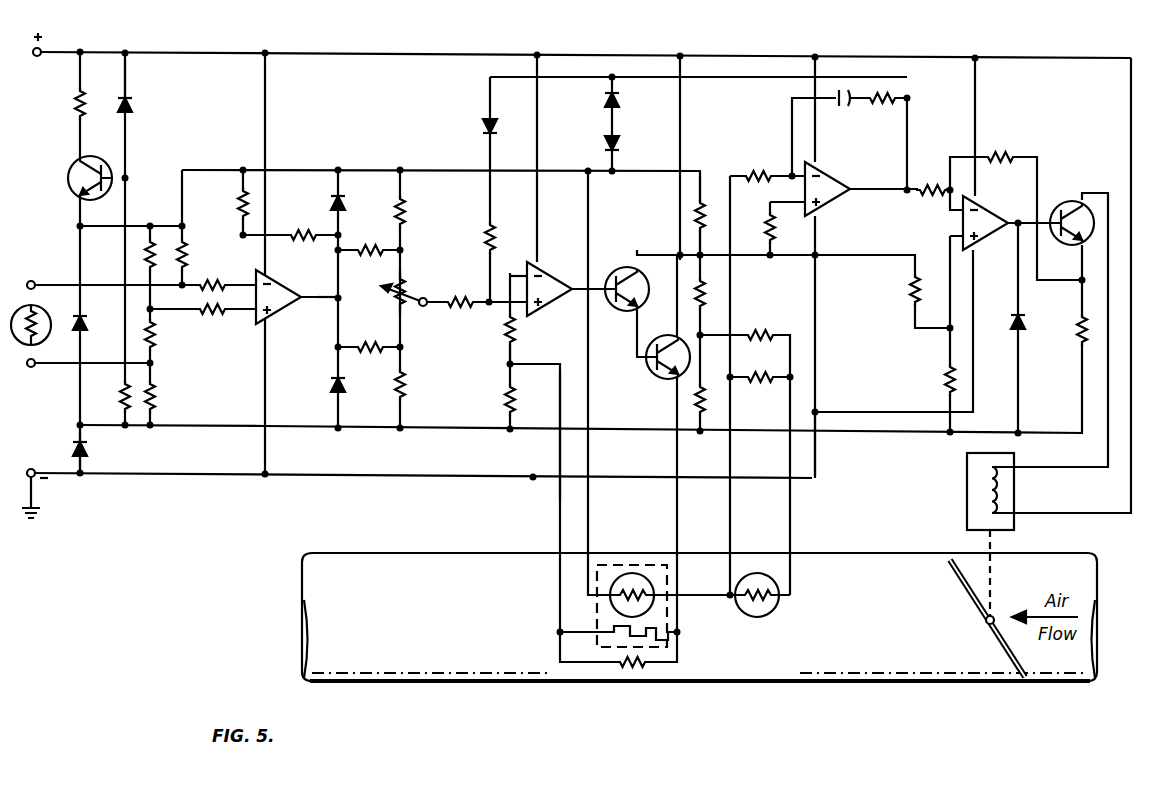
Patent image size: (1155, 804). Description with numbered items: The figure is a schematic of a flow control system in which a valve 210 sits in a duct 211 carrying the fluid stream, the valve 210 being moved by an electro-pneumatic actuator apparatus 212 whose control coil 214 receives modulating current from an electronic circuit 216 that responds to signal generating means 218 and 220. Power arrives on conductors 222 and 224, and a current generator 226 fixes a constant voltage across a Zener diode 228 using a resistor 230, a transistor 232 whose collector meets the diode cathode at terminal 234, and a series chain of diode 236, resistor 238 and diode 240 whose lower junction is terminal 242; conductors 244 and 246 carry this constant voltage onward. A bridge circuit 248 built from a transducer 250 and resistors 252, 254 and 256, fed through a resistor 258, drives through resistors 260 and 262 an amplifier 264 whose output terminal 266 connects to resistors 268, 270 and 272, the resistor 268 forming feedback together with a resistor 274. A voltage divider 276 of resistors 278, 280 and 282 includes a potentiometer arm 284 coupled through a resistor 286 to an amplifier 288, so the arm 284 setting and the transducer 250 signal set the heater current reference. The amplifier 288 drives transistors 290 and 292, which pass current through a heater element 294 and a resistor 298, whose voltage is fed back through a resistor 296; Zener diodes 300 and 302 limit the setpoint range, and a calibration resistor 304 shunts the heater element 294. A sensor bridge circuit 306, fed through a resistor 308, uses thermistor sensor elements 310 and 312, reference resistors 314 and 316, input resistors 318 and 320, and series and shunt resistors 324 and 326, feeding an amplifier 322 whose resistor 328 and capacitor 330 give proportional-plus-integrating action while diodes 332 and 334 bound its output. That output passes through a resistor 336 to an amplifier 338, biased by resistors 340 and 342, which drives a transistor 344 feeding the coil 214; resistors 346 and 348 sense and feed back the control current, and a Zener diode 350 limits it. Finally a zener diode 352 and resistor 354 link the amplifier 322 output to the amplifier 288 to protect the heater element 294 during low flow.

The valve 210 is at (984, 628).
The duct 211 is at (448, 629).
The electro-pneumatic actuator apparatus 212 is at (960, 490).
The control coil 214 is at (984, 513).
The electronic circuit 216 is at (205, 520).
The signal generating means 218 is at (805, 523).
The signal generating means 220 is at (530, 523).
The positive power conductor 222 is at (151, 52).
The power conductor 224 is at (100, 477).
The current generator 226 is at (163, 146).
The Zener diode 228 is at (73, 332).
The resistor 230 is at (76, 104).
The transistor 232 is at (67, 178).
The terminal 234 is at (80, 225).
The diode 236 is at (135, 104).
The resistor 238 is at (120, 392).
The diode 240 is at (90, 449).
The terminal 242 is at (80, 425).
The conductor 244 is at (290, 169).
The conductor 246 is at (288, 430).
The bridge circuit 248 is at (233, 360).
The transducer 250 is at (31, 281).
The resistor 252 is at (186, 246).
The resistor 254 is at (150, 238).
The resistor 256 is at (156, 333).
The resistor 258 is at (156, 393).
The resistor 260 is at (208, 281).
The resistor 262 is at (217, 314).
The amplifier 264 is at (272, 322).
The output terminal 266 is at (345, 300).
The resistor 268 is at (298, 230).
The resistor 270 is at (370, 245).
The resistor 272 is at (356, 350).
The resistor 274 is at (240, 196).
The voltage divider 276 is at (415, 263).
The resistor 278 is at (405, 214).
The resistor 280 is at (418, 280).
The resistor 282 is at (406, 385).
The arm 284 is at (448, 297).
The resistor 286 is at (500, 330).
The amplifier 288 is at (548, 304).
The transistor 290 is at (622, 268).
The transistor 292 is at (652, 370).
The heater element 294 is at (678, 648).
The resistor 296 is at (506, 346).
The resistor 298 is at (500, 410).
The Zener diode 300 is at (362, 195).
The Zener diode 302 is at (330, 388).
The calibration resistor 304 is at (618, 670).
The sensor bridge circuit 306 is at (738, 134).
The resistor 308 is at (690, 404).
The sensor element 310 is at (632, 572).
The sensor element 312 is at (776, 609).
The reference resistor 314 is at (702, 200).
The reference resistor 316 is at (706, 286).
The input resistor 318 is at (768, 162).
The input resistor 320 is at (768, 232).
The amplifier 322 is at (825, 207).
The series resistor 324 is at (765, 330).
The shunt resistor 326 is at (756, 386).
The resistor 328 is at (882, 108).
The capacitor 330 is at (843, 108).
The diode 332 is at (620, 100).
The diode 334 is at (620, 143).
The resistor 336 is at (935, 185).
The amplifier 338 is at (978, 247).
The resistor 340 is at (908, 294).
The resistor 342 is at (944, 380).
The transistor 344 is at (1062, 200).
The resistor 346 is at (1078, 342).
The resistor 348 is at (1005, 152).
The Zener diode 350 is at (1010, 328).
The zener diode 352 is at (482, 128).
The resistor 354 is at (495, 236).